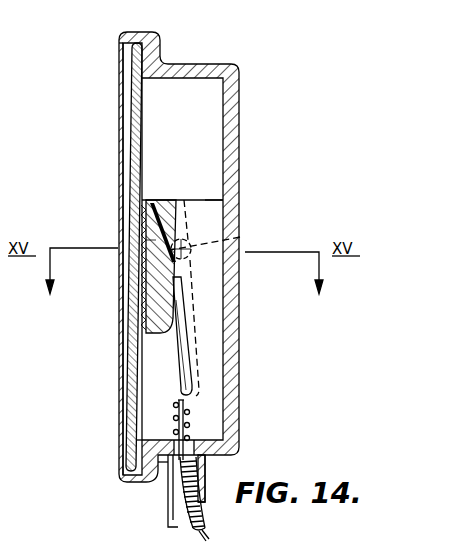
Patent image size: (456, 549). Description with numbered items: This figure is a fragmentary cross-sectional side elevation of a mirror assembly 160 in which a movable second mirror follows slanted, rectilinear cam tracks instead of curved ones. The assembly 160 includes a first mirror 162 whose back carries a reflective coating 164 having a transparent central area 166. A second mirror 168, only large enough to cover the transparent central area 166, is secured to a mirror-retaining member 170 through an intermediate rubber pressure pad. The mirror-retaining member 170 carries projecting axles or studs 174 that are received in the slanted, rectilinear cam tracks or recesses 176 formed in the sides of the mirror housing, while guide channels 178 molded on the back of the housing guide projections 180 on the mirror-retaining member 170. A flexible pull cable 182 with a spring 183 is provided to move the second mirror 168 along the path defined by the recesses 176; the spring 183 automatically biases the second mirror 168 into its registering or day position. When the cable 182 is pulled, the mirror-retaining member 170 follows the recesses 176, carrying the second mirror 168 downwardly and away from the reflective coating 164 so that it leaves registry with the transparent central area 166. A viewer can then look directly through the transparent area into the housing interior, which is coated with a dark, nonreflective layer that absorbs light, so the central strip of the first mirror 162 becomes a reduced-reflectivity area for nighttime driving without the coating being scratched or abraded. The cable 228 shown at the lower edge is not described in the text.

The mirror assembly 160 is at (214, 53).
The first mirror 162 is at (140, 342).
The reflective coating 164 is at (149, 129).
The transparent central area 166 is at (141, 257).
The second mirror 168 is at (150, 200).
The mirror-retaining member 170 is at (174, 340).
The projecting axle 174 is at (240, 237).
The rectilinear cam track 176 is at (182, 382).
The guide channel 178 is at (210, 224).
The guide projection 180 is at (158, 236).
The flexible pull cable 182 is at (187, 430).
The spring 183 is at (180, 403).
The cable 228 is at (160, 502).